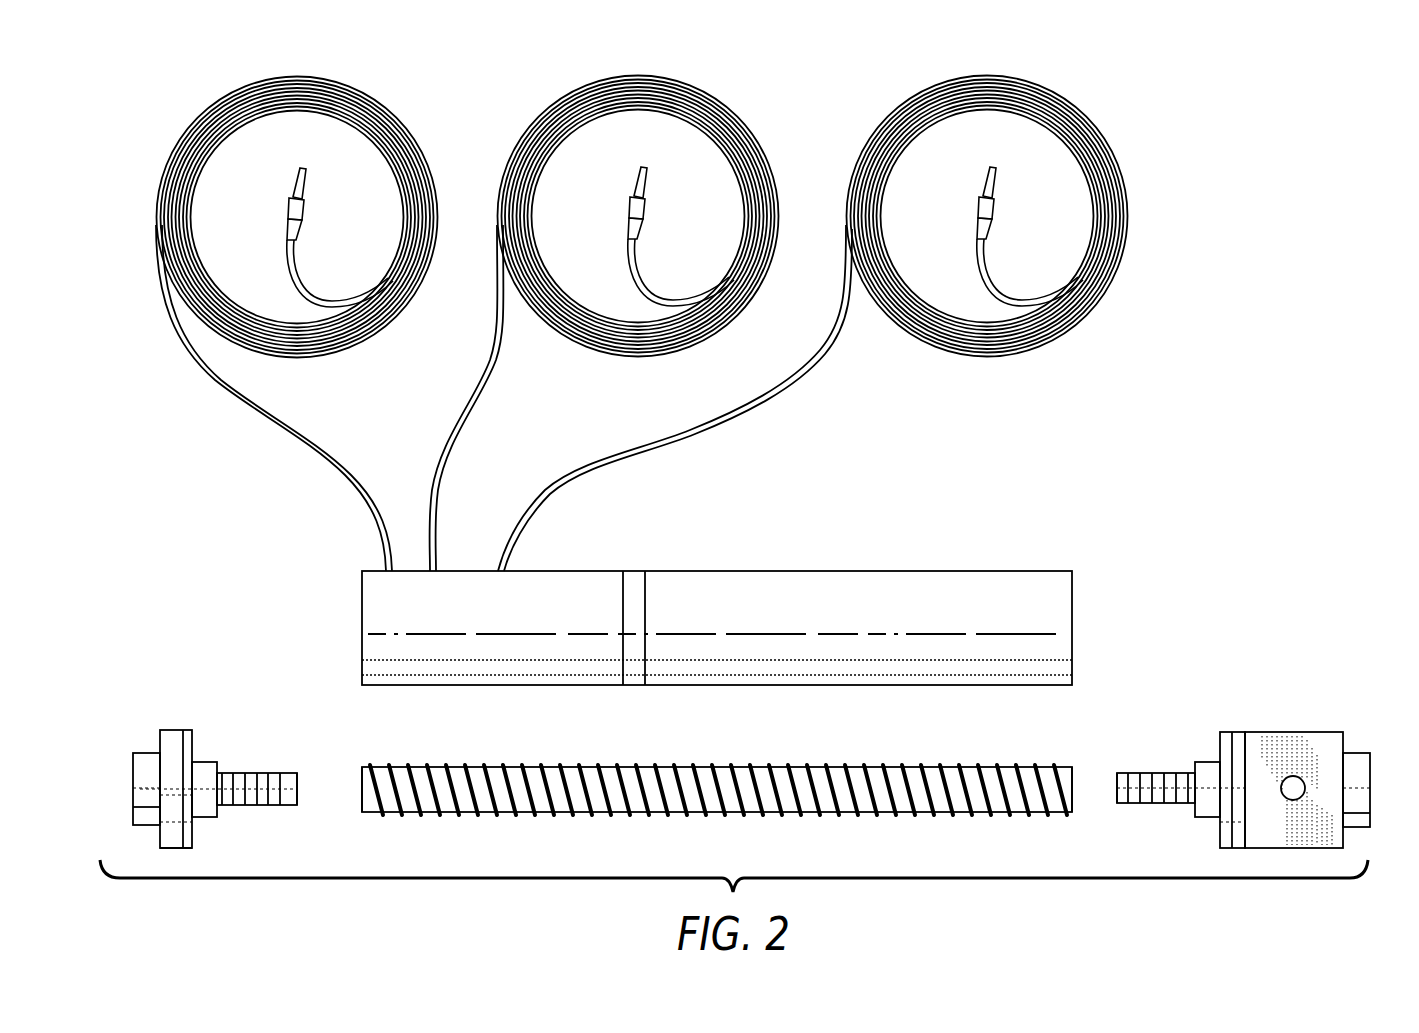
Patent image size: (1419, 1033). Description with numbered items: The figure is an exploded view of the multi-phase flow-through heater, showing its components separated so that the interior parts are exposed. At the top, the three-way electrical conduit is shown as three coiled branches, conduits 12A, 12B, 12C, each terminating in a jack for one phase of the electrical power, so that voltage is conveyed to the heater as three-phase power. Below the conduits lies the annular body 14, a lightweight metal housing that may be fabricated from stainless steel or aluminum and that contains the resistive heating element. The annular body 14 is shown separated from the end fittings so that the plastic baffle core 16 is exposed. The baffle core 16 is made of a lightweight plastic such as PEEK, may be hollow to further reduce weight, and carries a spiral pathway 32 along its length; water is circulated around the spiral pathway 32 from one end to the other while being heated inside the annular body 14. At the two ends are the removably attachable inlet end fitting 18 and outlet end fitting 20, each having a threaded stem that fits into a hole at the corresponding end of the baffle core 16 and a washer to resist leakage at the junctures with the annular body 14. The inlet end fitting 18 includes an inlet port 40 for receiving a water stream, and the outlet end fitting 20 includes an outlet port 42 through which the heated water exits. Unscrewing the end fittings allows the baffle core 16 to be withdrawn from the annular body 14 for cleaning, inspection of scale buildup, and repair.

The electrical conduit (first phase) 12A is at (170, 158).
The electrical conduit (second phase) 12B is at (537, 106).
The electrical conduit (third phase) 12C is at (880, 114).
The annular body 14 is at (897, 571).
The baffle core 16 is at (752, 767).
The spiral pathway 32 is at (447, 767).
The inlet end fitting 18 is at (170, 842).
The inlet port 40 is at (133, 785).
The outlet port 42 is at (1370, 783).
The outlet end fitting 20 is at (1325, 732).